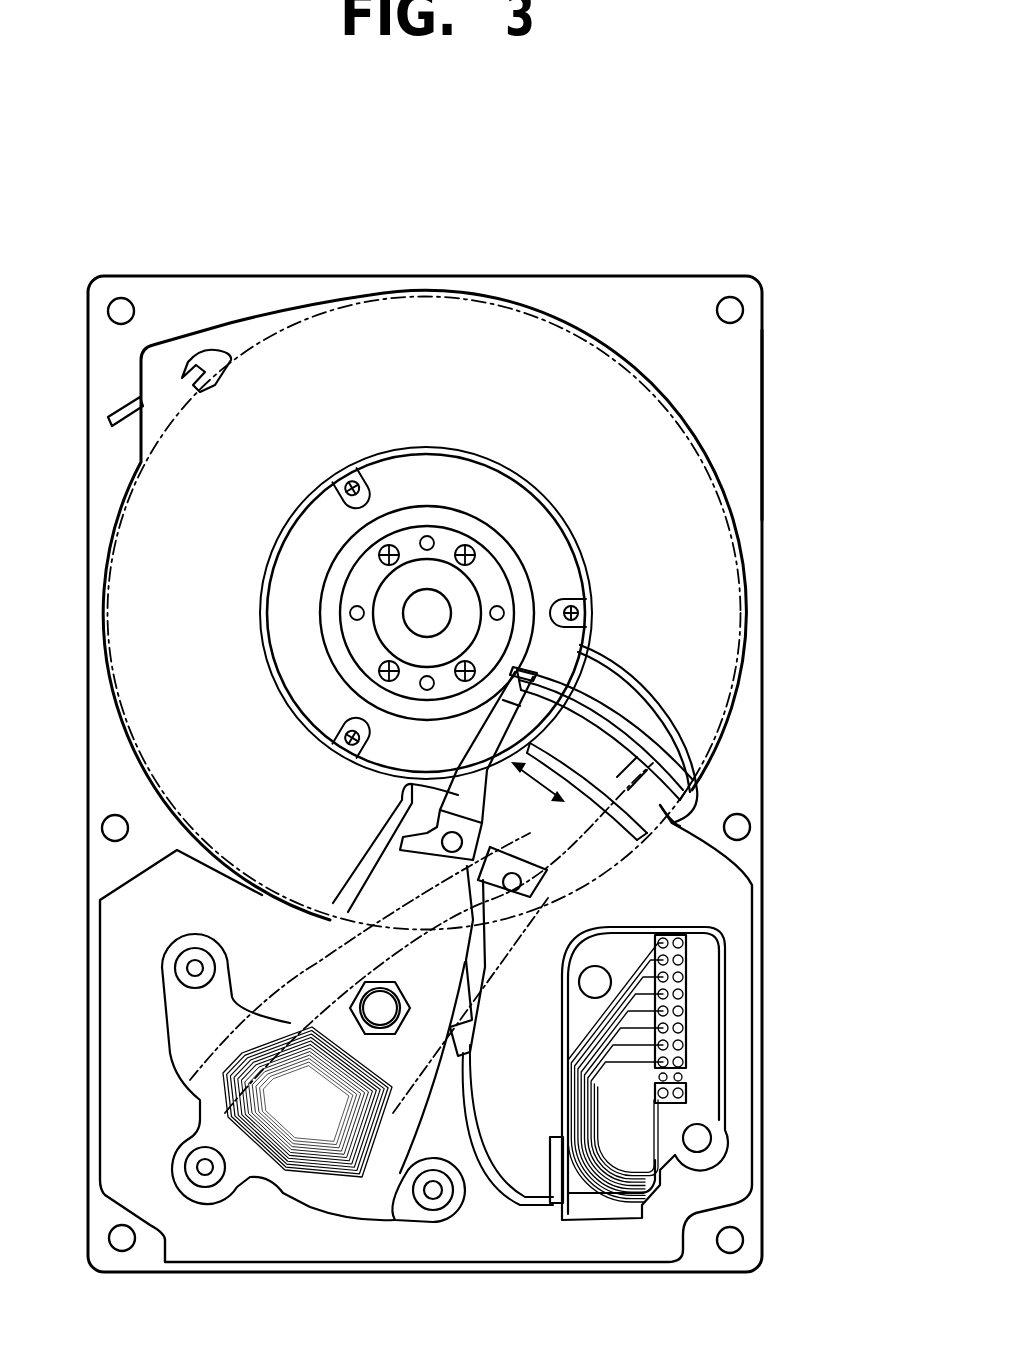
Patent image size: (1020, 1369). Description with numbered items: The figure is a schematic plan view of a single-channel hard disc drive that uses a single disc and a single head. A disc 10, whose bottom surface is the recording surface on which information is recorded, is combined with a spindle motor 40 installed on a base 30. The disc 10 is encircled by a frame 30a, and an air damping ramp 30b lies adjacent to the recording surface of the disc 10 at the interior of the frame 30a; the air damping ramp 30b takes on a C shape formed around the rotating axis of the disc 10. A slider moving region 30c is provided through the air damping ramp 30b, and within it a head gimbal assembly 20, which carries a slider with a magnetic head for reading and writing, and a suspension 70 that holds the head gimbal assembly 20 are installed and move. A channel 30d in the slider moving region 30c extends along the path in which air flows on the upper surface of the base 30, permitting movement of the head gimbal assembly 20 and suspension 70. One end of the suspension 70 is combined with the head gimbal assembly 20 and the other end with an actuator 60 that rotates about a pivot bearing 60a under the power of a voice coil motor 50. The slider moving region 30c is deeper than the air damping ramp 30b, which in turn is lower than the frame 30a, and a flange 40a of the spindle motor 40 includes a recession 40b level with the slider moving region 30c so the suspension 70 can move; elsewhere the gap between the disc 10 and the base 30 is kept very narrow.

The disc 10 is at (720, 610).
The head gimbal assembly (HGA) 20 is at (548, 683).
The base 30 is at (692, 266).
The frame 30a is at (745, 428).
The air damping ramp 30b is at (682, 720).
The slider moving region 30c is at (652, 757).
The channel 30d is at (606, 756).
The spindle motor 40 is at (432, 486).
The flange 40a is at (560, 558).
The recession 40b is at (467, 750).
The voice coil motor 50 is at (355, 1185).
The actuator 60 is at (413, 863).
The pivot bearing 60a is at (375, 1003).
The suspension 70 is at (400, 783).